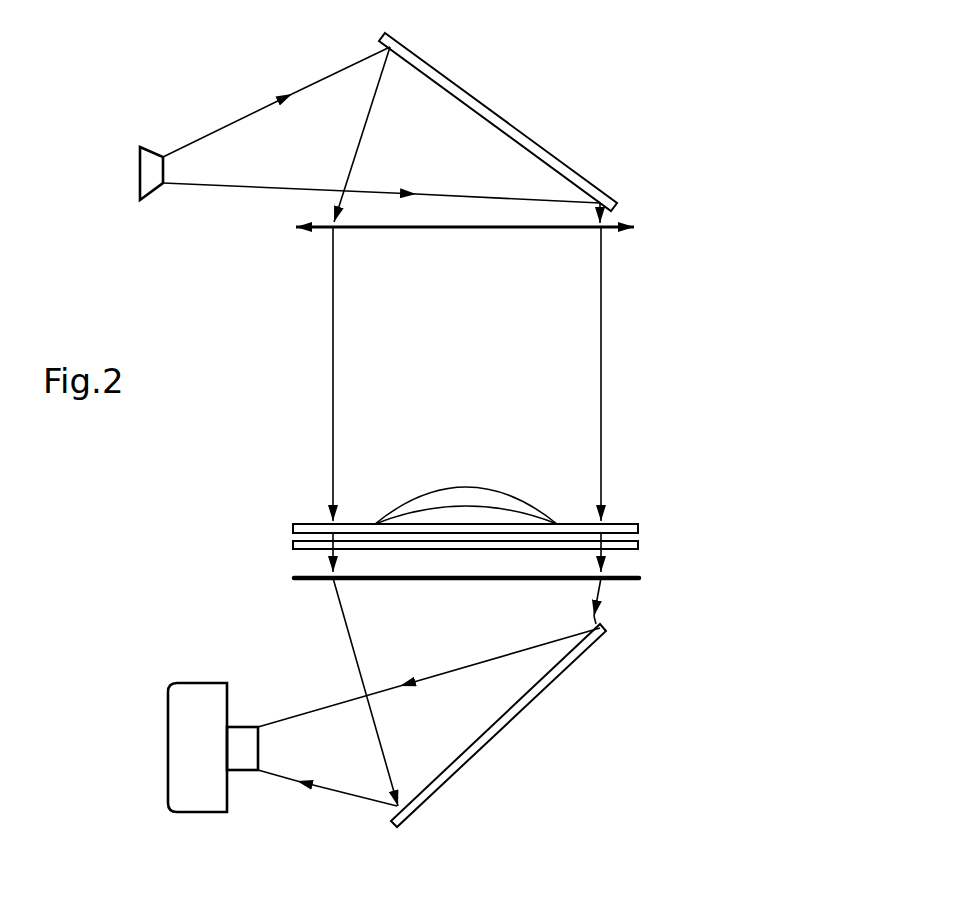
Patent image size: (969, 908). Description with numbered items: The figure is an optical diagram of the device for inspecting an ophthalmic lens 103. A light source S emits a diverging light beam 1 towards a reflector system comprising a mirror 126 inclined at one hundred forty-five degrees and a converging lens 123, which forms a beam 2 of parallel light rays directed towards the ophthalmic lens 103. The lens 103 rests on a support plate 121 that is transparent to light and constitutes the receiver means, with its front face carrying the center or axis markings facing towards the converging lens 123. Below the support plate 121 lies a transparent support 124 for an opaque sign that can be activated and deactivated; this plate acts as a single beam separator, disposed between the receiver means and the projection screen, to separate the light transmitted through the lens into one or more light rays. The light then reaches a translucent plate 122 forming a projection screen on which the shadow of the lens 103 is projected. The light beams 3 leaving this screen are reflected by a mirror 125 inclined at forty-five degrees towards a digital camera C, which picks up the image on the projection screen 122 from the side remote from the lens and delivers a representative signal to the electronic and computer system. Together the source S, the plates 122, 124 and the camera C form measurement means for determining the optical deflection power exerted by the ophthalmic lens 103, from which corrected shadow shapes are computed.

The light source S is at (158, 188).
The diverging light beam 1 is at (221, 142).
The beam of parallel light rays 2 is at (584, 332).
The light beam 3 is at (360, 641).
The digital camera C is at (185, 688).
The ophthalmic lens 103 is at (417, 494).
The support plate 121 is at (627, 522).
The translucent plate 122 is at (516, 582).
The converging lens 123 is at (418, 230).
The transparent sign support 124 is at (640, 545).
The mirror 125 is at (556, 680).
The mirror 126 is at (460, 90).